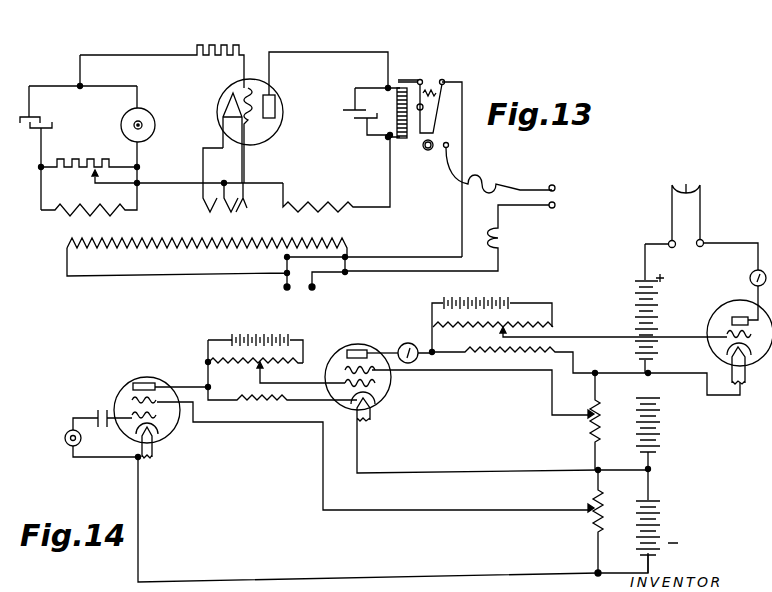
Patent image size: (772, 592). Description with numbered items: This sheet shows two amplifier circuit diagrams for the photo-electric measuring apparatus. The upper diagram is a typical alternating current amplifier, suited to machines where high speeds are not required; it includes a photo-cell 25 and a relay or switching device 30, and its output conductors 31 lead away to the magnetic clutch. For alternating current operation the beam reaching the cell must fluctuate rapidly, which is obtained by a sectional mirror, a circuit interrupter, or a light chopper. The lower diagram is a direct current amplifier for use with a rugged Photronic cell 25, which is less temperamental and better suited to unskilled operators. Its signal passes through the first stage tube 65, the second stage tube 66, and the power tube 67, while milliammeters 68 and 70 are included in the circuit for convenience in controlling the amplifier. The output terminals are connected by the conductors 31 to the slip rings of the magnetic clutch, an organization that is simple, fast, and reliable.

In FIG. 13, the Photronic cell 25 is at (153, 116).
In FIG. 14, the Photronic cell 25 is at (66, 443).
In FIG. 13, the relay 30 is at (452, 68).
In FIG. 13, the conductors 31 is at (523, 190).
In FIG. 14, the conductors 31 is at (701, 216).
In FIG. 14, the first stage tube 65 is at (173, 437).
In FIG. 14, the second stage tube 66 is at (387, 397).
In FIG. 14, the power tube 67 is at (730, 303).
In FIG. 14, the milliammeter 68 is at (408, 343).
In FIG. 14, the milliammeter 70 is at (751, 274).